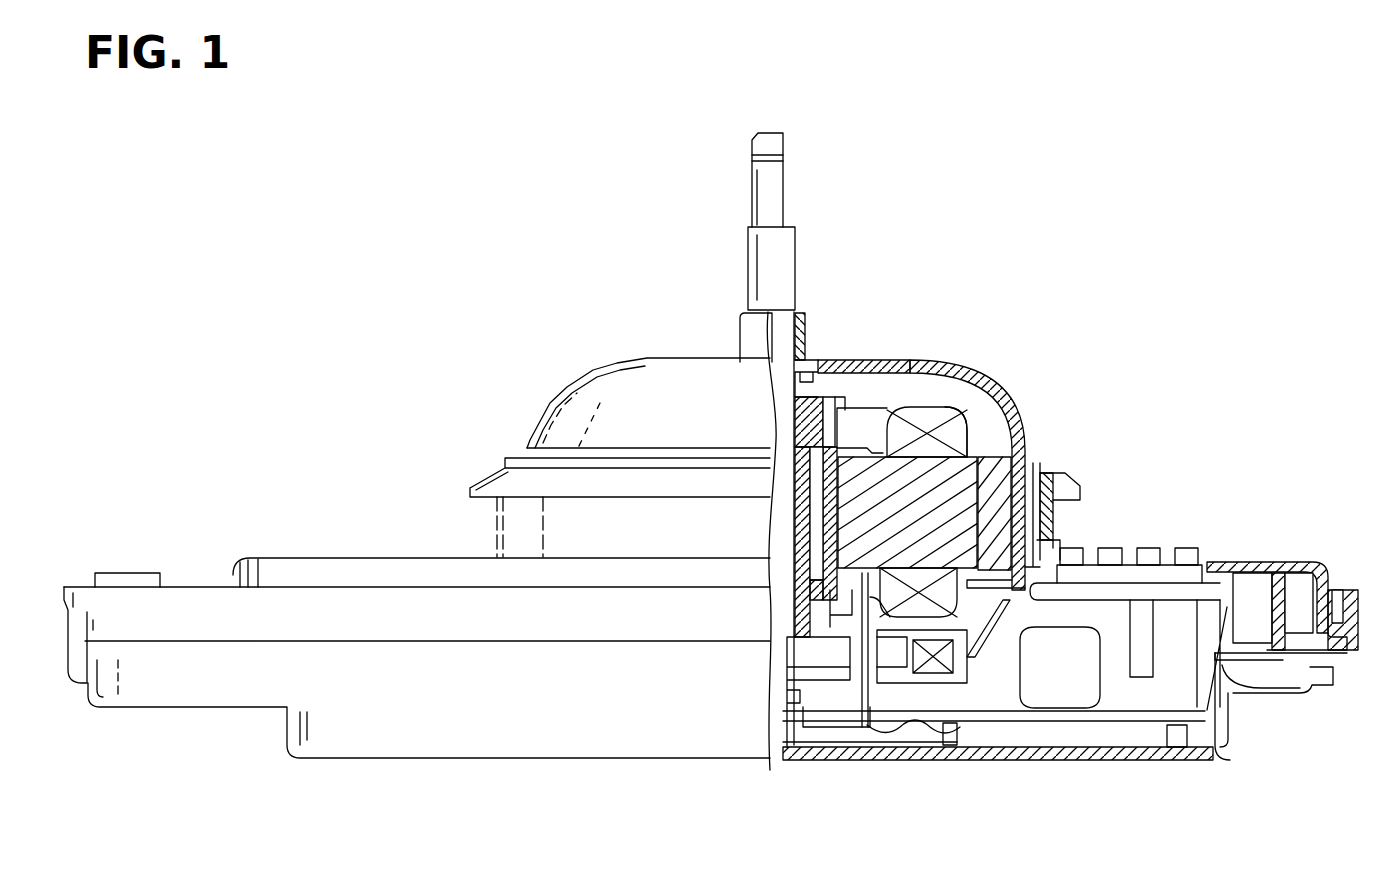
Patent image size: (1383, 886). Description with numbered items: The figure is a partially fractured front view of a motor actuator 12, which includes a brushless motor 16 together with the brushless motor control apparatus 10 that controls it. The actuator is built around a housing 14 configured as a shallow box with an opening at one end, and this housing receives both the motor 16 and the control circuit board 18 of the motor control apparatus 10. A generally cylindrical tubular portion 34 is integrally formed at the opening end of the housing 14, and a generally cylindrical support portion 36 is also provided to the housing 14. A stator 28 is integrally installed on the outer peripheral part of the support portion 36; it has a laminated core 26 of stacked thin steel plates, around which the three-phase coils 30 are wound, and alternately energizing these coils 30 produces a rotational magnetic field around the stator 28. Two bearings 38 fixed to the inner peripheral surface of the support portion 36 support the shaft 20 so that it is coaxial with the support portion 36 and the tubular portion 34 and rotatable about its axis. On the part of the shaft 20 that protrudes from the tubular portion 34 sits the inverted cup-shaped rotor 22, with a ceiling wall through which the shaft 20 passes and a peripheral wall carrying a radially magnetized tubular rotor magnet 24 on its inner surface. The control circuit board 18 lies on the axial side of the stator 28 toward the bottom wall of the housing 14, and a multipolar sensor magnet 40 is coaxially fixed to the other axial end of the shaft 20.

The brushless motor control apparatus 10 is at (1063, 730).
The motor actuator 12 is at (948, 226).
The housing 14 is at (423, 555).
The brushless motor 16 is at (936, 402).
The control circuit board 18 is at (1037, 721).
The shaft 20 is at (797, 280).
The rotor 22 is at (655, 356).
The rotor magnet 24 is at (1005, 446).
The core 26 is at (932, 437).
The stator 28 is at (860, 405).
The coils 30 is at (984, 436).
The tubular portion 34 is at (1043, 466).
The support portion 36 is at (879, 393).
The bearings 38 is at (792, 416).
The sensor magnet 40 is at (809, 680).